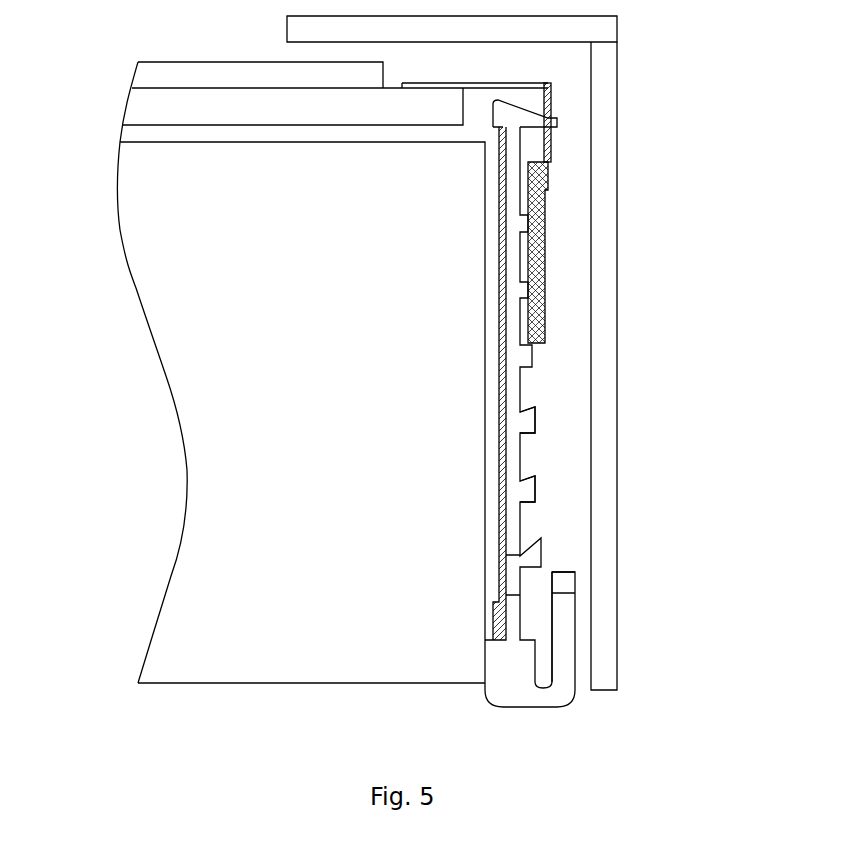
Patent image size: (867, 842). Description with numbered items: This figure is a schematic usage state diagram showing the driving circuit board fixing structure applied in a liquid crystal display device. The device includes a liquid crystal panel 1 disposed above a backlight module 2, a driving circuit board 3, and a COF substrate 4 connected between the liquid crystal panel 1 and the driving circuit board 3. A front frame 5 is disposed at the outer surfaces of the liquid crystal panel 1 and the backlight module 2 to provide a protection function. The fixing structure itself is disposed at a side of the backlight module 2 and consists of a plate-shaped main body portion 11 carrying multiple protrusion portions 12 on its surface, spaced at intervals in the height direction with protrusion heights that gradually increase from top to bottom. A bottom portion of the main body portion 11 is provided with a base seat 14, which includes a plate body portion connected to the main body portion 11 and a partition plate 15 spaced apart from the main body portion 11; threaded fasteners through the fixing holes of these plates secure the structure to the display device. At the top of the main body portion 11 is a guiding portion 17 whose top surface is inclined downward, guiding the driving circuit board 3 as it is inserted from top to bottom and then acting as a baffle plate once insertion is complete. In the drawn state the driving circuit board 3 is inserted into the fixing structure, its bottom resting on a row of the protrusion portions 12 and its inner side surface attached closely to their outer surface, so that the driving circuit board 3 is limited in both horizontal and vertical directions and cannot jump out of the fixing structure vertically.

The liquid crystal panel 1 is at (152, 105).
The backlight module 2 is at (154, 290).
The driving circuit board 3 is at (531, 228).
The COF substrate 4 is at (548, 87).
The front frame 5 is at (605, 280).
The main body portion 11 is at (518, 386).
The protrusion portions 12 is at (538, 490).
The base seat 14 is at (520, 678).
The partition plate 15 is at (568, 632).
The guiding portion 17 is at (523, 122).